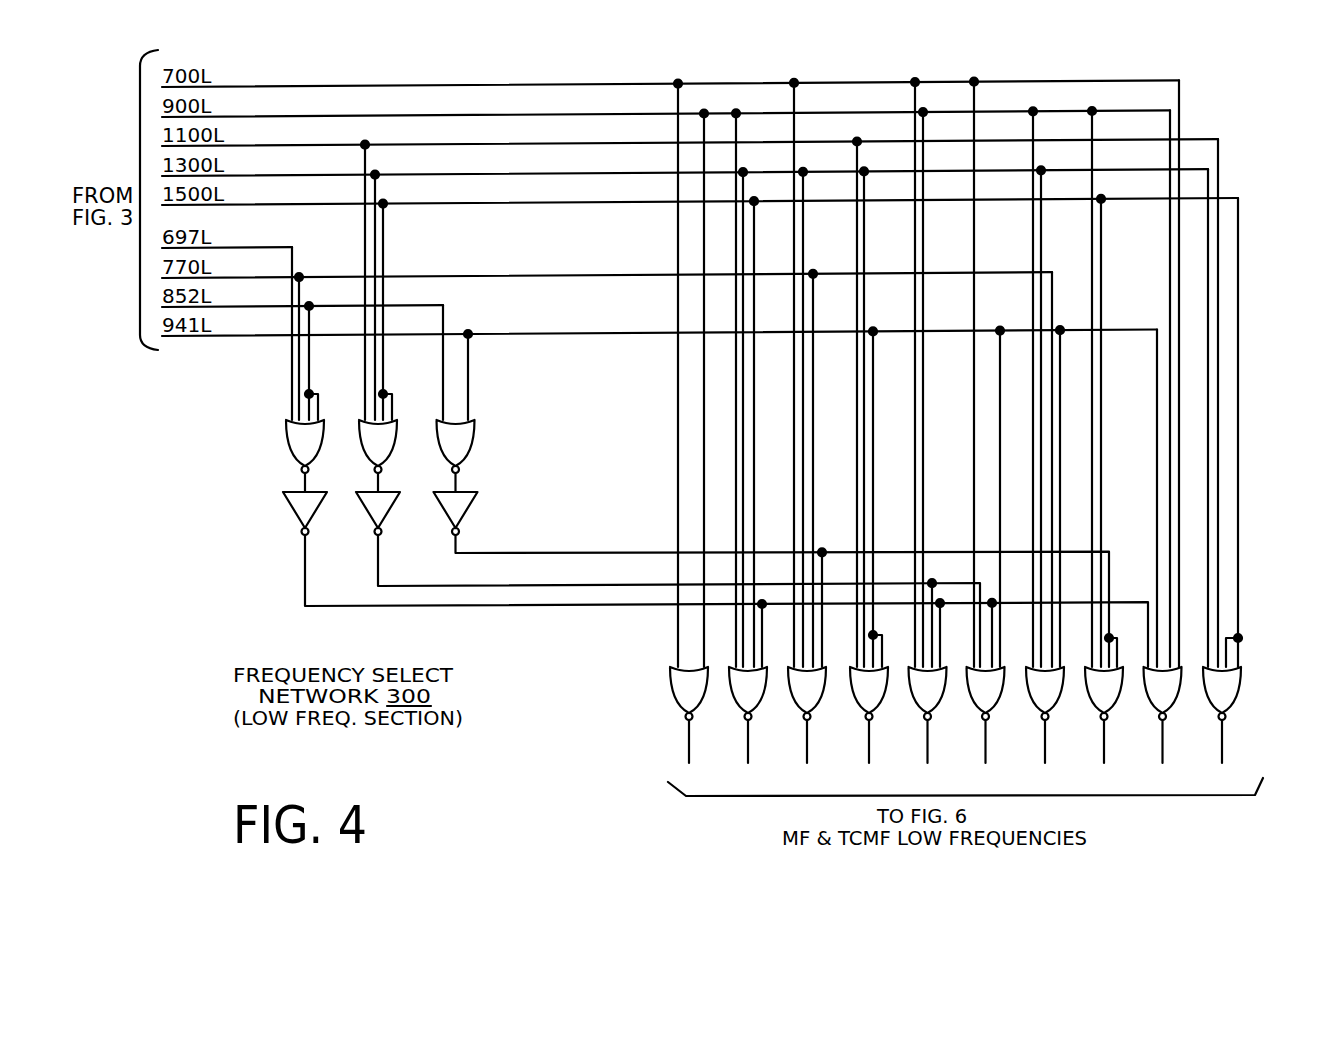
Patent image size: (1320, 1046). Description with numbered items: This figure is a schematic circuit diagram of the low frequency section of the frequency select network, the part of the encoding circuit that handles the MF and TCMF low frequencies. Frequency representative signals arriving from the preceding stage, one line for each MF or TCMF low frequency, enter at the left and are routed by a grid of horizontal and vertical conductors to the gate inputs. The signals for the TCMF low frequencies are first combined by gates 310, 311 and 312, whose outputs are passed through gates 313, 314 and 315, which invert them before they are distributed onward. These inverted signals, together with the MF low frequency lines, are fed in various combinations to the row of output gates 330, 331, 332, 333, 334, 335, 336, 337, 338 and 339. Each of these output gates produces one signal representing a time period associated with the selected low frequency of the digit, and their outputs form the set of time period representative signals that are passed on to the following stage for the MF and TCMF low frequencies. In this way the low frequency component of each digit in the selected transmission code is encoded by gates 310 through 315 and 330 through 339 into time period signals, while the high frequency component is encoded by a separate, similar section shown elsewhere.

The gate 310 is at (322, 450).
The gate 311 is at (395, 450).
The gate 312 is at (472, 450).
The gate 313 is at (318, 507).
The gate 314 is at (391, 507).
The gate 315 is at (468, 507).
The gate 330 is at (699, 709).
The gate 331 is at (758, 709).
The gate 332 is at (817, 709).
The gate 333 is at (879, 709).
The gate 334 is at (938, 709).
The gate 335 is at (996, 709).
The gate 336 is at (1055, 709).
The gate 337 is at (1114, 709).
The gate 338 is at (1172, 709).
The gate 339 is at (1232, 709).